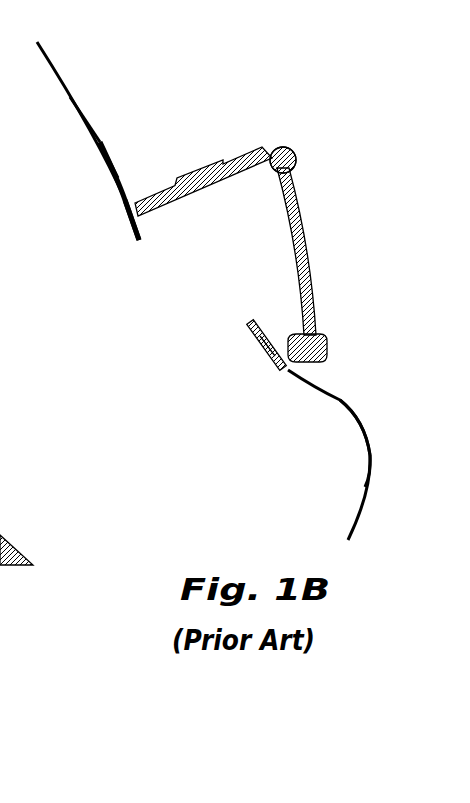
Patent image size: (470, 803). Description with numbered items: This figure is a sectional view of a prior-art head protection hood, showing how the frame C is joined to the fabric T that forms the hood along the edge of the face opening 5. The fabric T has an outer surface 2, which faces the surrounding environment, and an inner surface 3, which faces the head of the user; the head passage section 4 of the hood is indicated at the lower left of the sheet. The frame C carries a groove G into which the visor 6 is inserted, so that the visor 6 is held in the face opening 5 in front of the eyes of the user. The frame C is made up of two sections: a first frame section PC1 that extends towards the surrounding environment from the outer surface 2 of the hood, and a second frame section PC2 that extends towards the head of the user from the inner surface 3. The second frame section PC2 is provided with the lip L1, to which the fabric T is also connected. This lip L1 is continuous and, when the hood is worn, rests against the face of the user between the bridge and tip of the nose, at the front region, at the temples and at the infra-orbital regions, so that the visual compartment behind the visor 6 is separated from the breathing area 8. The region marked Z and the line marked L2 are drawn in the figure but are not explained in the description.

The fabric T is at (55, 63).
The outer surface 2 is at (83, 112).
The inner surface 3 is at (88, 125).
The frame C is at (270, 148).
The first frame section PC1 is at (270, 115).
The groove G is at (291, 147).
The visor 6 is at (305, 240).
The gap zone Z is at (237, 237).
The lip L1 is at (130, 208).
The second frame section PC2 is at (140, 241).
The face opening 5 is at (185, 305).
The second contact line L2 is at (268, 350).
The breathing area 8 is at (376, 439).
The head passage section 4 is at (0, 575).